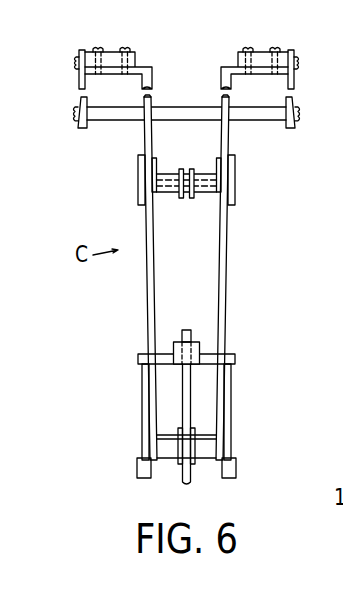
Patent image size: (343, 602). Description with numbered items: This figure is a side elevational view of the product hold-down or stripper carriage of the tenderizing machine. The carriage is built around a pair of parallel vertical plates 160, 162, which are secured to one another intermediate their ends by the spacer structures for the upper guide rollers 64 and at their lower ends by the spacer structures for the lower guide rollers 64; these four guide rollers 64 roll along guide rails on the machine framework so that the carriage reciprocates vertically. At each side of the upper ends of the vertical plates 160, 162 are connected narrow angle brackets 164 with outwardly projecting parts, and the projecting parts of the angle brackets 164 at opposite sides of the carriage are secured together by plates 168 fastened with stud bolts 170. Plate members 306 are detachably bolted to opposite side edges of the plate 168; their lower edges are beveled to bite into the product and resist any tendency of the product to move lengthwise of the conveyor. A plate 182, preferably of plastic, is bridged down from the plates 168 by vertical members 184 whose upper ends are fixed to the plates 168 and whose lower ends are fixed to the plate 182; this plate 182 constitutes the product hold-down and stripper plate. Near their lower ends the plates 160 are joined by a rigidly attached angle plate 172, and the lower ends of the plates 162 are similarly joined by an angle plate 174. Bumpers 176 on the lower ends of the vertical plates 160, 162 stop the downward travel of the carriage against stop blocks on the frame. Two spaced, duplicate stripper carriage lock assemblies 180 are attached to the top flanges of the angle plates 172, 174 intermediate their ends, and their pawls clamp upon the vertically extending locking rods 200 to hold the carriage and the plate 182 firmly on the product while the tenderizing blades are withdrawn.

The guide rollers 64 is at (190, 170).
The vertical plate 160 is at (227, 255).
The vertical plate 162 is at (145, 302).
The angle brackets 164 is at (138, 158).
The plates 168 is at (137, 61).
The stud bolts 170 is at (103, 48).
The angle plate 172 is at (224, 410).
The angle plate 174 is at (145, 413).
The bumpers 176 is at (137, 473).
The stripper carriage lock assemblies 180 is at (174, 344).
The plate 182 is at (88, 127).
The vertical members 184 is at (79, 79).
The locking rods 200 is at (182, 480).
The plate members 306 is at (297, 78).